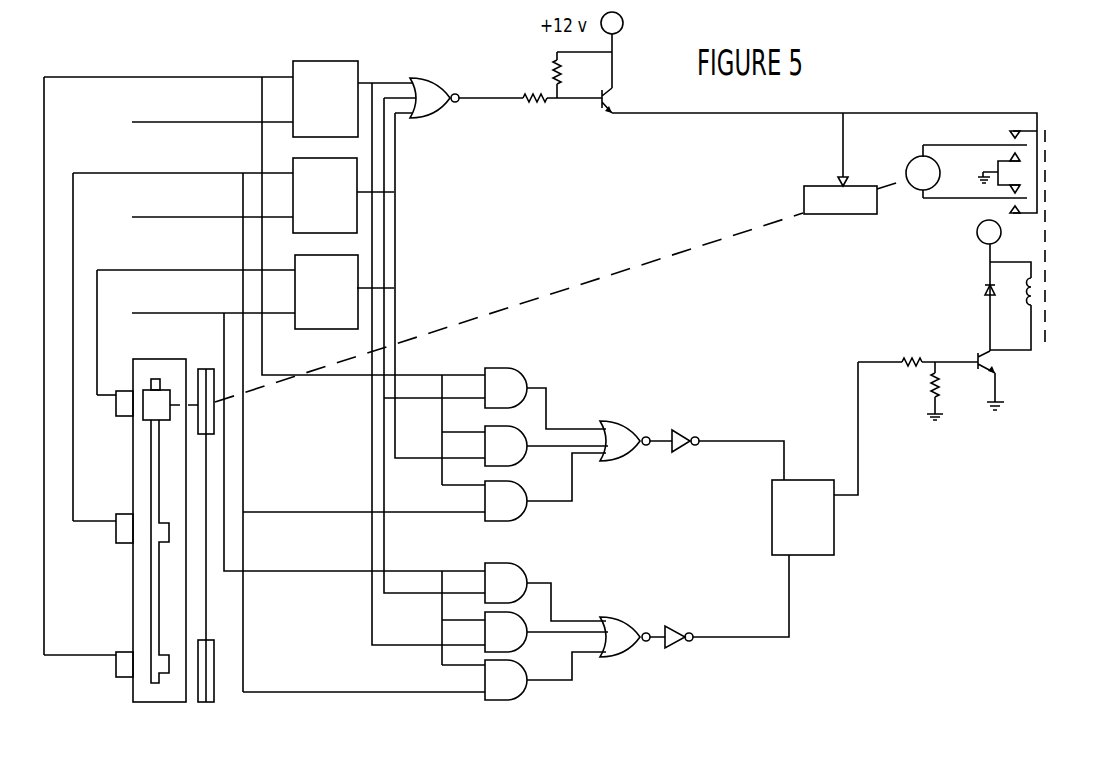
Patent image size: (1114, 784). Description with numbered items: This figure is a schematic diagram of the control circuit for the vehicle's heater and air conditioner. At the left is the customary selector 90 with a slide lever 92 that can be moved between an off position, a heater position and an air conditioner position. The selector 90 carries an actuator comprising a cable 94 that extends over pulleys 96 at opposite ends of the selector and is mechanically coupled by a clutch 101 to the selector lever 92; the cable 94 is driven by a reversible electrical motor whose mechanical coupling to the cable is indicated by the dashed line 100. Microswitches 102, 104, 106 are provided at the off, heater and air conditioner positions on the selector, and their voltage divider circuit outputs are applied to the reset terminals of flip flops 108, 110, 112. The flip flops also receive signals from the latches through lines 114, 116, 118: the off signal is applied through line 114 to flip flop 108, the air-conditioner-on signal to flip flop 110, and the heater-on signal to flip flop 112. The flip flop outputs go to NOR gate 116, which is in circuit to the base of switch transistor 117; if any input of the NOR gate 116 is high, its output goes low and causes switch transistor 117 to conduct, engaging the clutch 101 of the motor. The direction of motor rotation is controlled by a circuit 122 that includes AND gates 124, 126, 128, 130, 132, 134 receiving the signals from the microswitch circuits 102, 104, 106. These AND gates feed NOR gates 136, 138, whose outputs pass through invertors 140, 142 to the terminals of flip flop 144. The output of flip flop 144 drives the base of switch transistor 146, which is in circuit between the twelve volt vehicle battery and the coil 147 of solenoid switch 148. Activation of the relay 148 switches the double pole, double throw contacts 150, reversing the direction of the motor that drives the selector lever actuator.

The selector 90 is at (159, 509).
The slide lever 92 is at (152, 401).
The cable 94 is at (207, 474).
The pulleys 96 is at (262, 647).
The dashed line 100 is at (768, 223).
The clutch 101 is at (848, 208).
The microswitch 102 is at (127, 417).
The microswitch 104 is at (125, 532).
The microswitch 106 is at (122, 653).
The flip flop 108 is at (305, 102).
The flip flop 110 is at (305, 195).
The flip flop 112 is at (330, 320).
The line 114 is at (153, 121).
The NOR gate 116 is at (450, 70).
The switch transistor 117 is at (593, 105).
The line 118 is at (153, 313).
The circuit 122 is at (648, 356).
The AND gate 124 is at (503, 385).
The AND gate 126 is at (512, 443).
The AND gate 128 is at (512, 500).
The AND gate 130 is at (503, 572).
The AND gate 132 is at (512, 623).
The AND gate 134 is at (508, 682).
The NOR gate 136 is at (620, 442).
The NOR gate 138 is at (620, 637).
The invertor 140 is at (678, 443).
The invertor 142 is at (675, 638).
The flip flop 144 is at (832, 542).
The switch transistor 146 is at (997, 363).
The coil 147 is at (1040, 292).
The solenoid switch 148 is at (1058, 230).
The double pole, double throw contacts 150 is at (1025, 172).